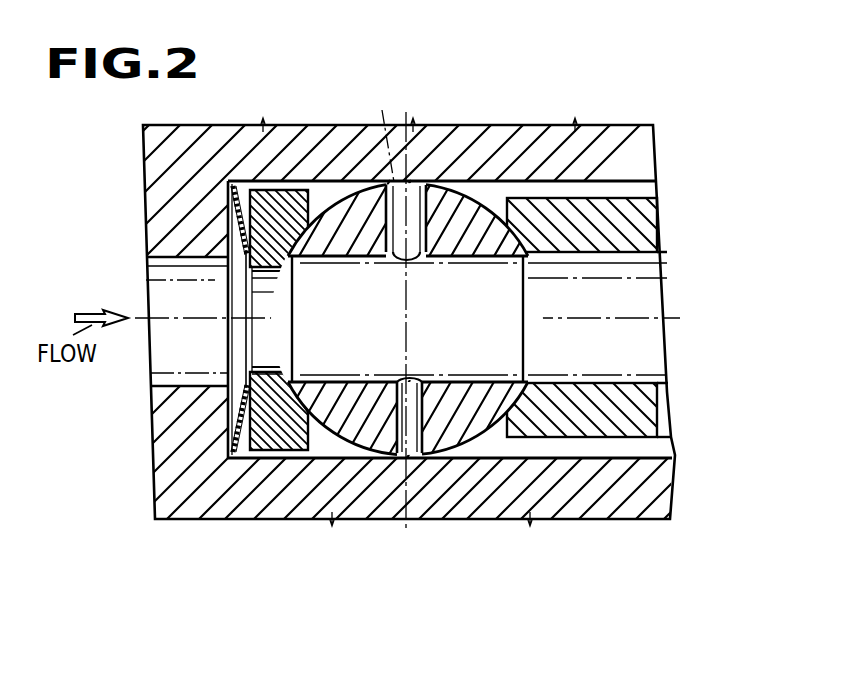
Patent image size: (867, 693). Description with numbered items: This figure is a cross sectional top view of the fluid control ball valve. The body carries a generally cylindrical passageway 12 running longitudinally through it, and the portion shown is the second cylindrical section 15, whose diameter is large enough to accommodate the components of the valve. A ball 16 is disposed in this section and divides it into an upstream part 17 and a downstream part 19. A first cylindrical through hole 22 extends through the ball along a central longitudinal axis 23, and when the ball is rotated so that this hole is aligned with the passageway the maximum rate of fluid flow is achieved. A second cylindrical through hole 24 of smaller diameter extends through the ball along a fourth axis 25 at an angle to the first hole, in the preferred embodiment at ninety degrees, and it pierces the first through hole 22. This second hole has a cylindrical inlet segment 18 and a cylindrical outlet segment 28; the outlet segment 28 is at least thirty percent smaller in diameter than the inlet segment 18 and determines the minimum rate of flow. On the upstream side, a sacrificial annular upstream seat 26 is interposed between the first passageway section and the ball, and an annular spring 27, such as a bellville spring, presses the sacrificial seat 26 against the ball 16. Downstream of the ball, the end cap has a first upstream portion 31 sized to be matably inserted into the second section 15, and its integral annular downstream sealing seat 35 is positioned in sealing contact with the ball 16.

The passageway 12 is at (158, 370).
The second cylindrical section 15 is at (320, 443).
The ball 16 is at (455, 447).
The upstream part 17 is at (318, 197).
The inlet segment 18 is at (417, 190).
The downstream part 19 is at (492, 195).
The first cylindrical through hole 22 is at (360, 270).
The central longitudinal axis 23 is at (470, 318).
The second cylindrical through hole 24 is at (407, 480).
The fourth axis 25 is at (382, 110).
The sacrificial annular upstream seat 26 is at (263, 447).
The annular spring 27 is at (223, 442).
The outlet segment 28 is at (403, 455).
The first upstream portion 31 is at (598, 445).
The annular downstream sealing seat 35 is at (517, 400).